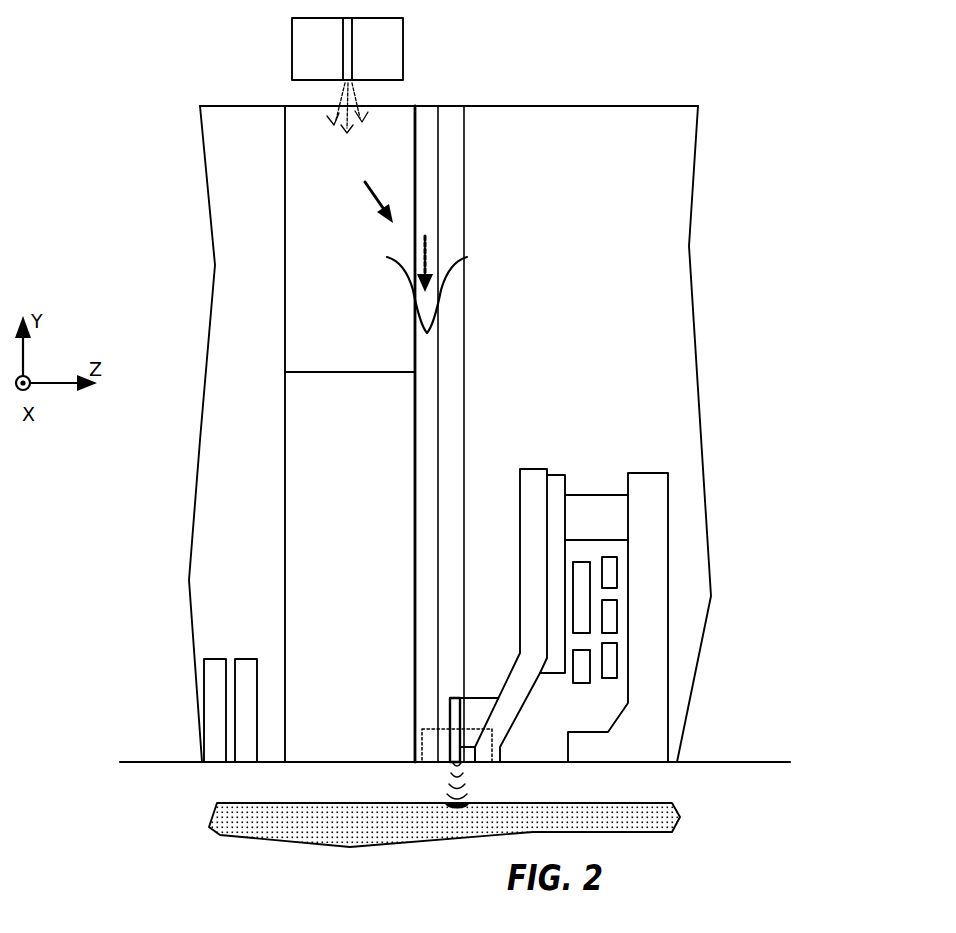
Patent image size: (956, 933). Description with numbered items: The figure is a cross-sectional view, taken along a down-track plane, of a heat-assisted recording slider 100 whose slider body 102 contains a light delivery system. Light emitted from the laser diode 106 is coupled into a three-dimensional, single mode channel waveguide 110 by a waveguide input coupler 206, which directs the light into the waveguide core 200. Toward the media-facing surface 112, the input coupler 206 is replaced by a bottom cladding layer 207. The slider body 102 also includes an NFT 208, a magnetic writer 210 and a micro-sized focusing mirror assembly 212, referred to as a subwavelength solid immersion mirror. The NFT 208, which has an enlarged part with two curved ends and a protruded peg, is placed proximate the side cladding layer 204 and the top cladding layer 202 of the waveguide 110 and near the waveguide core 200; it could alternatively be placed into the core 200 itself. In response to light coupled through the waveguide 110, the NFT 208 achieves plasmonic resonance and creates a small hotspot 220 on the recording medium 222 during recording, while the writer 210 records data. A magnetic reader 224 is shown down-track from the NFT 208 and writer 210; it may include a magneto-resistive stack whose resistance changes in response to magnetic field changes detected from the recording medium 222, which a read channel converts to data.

The processing system 100 is at (149, 213).
The slider body 102 is at (643, 107).
The laser diode 106 is at (292, 37).
The channel waveguide 110 is at (509, 212).
The media-facing surface 112 is at (778, 765).
The waveguide core 200 is at (433, 117).
The top cladding layer 202 is at (503, 130).
The side cladding layer 204 is at (460, 113).
The waveguide input coupler 206 is at (298, 133).
The bottom cladding layer 207 is at (292, 515).
The NFT 208 is at (450, 705).
The magnetic writer 210 is at (578, 422).
The focusing mirror assembly 212 is at (420, 745).
The hotspot 220 is at (457, 812).
The recording medium 222 is at (632, 802).
The magnetic reader 224 is at (208, 692).